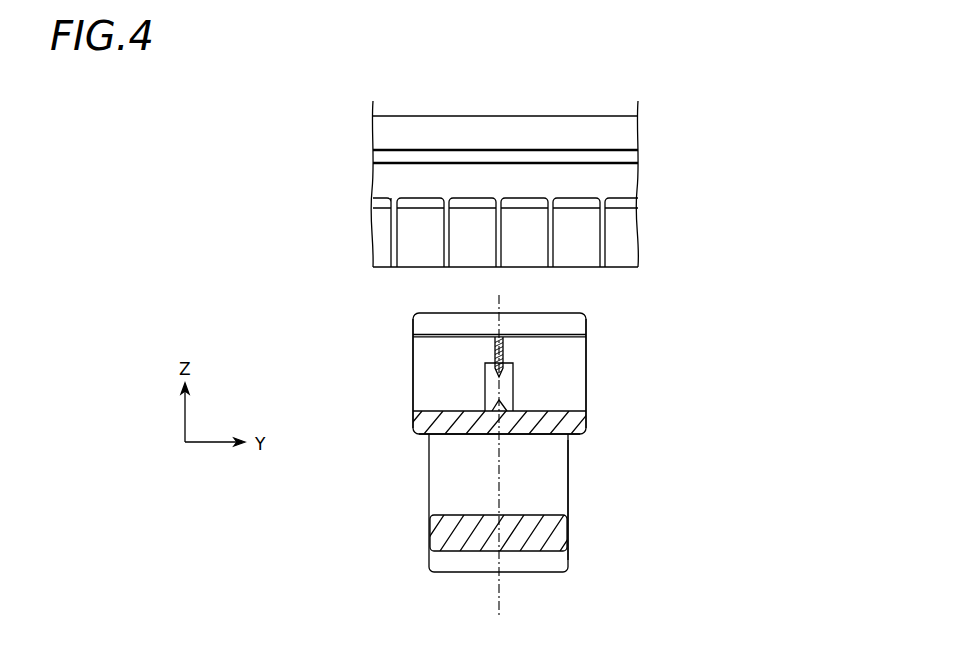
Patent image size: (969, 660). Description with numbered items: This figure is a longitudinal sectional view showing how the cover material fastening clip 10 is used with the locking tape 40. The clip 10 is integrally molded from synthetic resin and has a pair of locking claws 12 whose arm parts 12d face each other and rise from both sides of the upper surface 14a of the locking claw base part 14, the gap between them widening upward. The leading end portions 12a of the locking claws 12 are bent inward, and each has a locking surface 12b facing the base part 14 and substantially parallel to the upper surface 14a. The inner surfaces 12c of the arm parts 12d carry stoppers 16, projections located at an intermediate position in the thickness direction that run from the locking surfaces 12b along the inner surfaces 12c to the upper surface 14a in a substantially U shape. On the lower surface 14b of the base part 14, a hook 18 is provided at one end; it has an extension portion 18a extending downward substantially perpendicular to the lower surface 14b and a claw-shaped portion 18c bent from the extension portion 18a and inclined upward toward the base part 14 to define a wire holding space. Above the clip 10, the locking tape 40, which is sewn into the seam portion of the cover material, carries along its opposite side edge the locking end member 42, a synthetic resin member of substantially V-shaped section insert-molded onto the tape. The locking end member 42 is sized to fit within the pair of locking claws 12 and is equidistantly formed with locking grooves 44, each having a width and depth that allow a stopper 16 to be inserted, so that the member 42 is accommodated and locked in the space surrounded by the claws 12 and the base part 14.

The cover material fastening clip 10 is at (545, 455).
The locking claws 12 is at (577, 368).
The leading end portions 12a is at (442, 322).
The locking surface 12b is at (433, 338).
The inner surfaces 12c is at (442, 373).
The arm parts 12d is at (412, 396).
The locking claw base part 14 is at (565, 424).
The upper surface 14a is at (557, 410).
The lower surface 14b is at (550, 437).
The stoppers 16 is at (503, 349).
The hook 18 is at (442, 479).
The extension portion 18a is at (542, 493).
The claw-shaped portion 18c is at (508, 545).
The locking tape 40 is at (540, 133).
The locking end member 42 is at (478, 203).
The locking grooves 44 is at (602, 218).